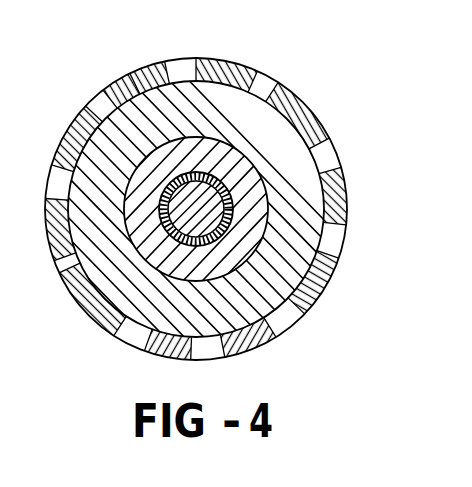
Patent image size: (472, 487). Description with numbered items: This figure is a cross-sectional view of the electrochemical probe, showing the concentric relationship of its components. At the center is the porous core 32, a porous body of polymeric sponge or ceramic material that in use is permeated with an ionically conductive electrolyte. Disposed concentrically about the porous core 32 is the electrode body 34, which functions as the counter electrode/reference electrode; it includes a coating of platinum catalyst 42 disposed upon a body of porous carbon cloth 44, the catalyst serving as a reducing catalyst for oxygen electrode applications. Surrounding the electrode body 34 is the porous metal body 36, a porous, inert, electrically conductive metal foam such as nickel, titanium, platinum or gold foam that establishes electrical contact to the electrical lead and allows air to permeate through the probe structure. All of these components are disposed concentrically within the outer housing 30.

The housing 30 is at (212, 77).
The porous body 32 is at (278, 105).
The electrode body 34 is at (271, 213).
The metal foam 36 is at (124, 72).
The coating of platinum catalyst 42 is at (216, 178).
The porous carbon cloth 44 is at (192, 208).